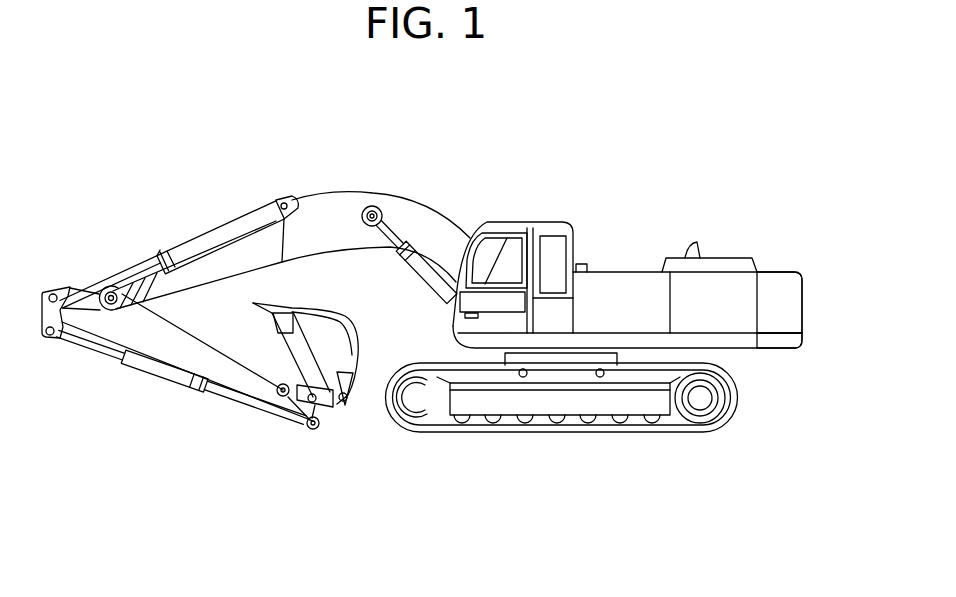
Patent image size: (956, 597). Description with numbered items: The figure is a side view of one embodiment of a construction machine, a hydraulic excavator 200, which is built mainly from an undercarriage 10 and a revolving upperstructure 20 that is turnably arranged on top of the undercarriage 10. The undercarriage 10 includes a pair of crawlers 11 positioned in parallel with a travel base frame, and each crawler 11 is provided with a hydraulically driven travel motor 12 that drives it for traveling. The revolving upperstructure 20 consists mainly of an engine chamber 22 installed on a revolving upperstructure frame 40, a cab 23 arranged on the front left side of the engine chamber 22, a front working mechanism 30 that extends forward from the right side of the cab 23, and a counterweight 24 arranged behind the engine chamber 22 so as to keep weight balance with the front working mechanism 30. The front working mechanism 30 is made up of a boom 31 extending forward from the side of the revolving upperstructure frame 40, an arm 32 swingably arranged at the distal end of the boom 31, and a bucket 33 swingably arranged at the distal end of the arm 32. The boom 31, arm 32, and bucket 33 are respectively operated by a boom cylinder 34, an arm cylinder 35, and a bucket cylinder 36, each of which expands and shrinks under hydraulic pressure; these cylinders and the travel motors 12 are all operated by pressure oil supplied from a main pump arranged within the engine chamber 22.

The hydraulic excavator 200 is at (566, 206).
The undercarriage 10 is at (618, 437).
The crawler 11 is at (412, 432).
The travel motor 12 is at (700, 404).
The revolving upperstructure 20 is at (615, 268).
The engine chamber 22 is at (708, 283).
The cab 23 is at (520, 221).
The counterweight 24 is at (783, 307).
The revolving upperstructure frame 40 is at (780, 343).
The front working mechanism 30 is at (351, 192).
The boom 31 is at (419, 217).
The arm 32 is at (125, 333).
The bucket 33 is at (297, 350).
The boom cylinder 34 is at (430, 277).
The arm cylinder 35 is at (210, 228).
The bucket cylinder 36 is at (163, 380).